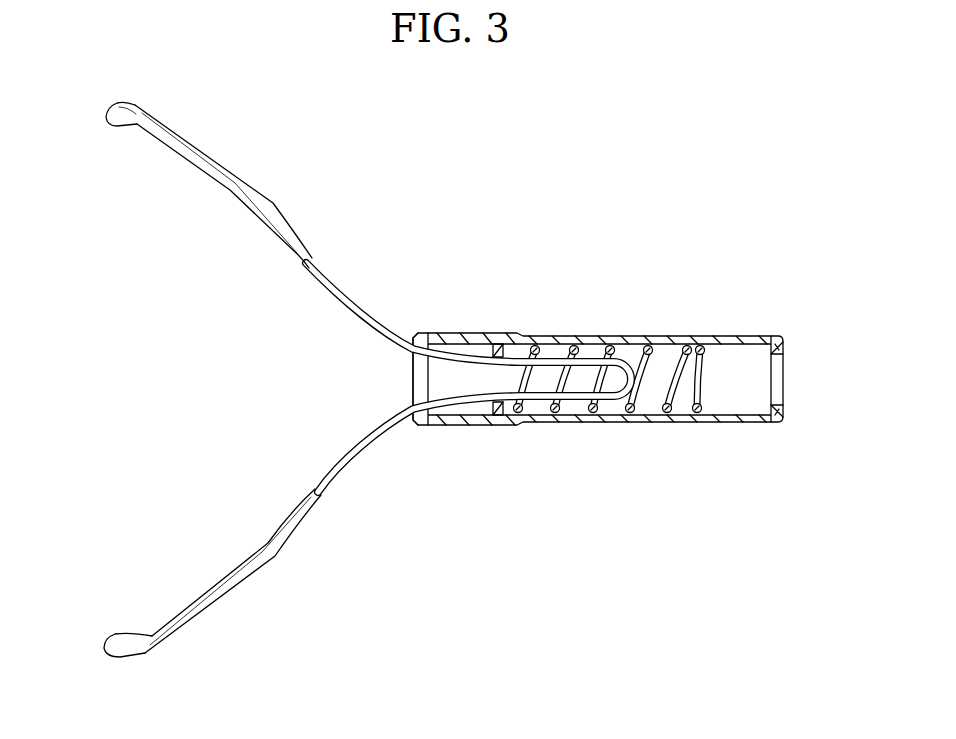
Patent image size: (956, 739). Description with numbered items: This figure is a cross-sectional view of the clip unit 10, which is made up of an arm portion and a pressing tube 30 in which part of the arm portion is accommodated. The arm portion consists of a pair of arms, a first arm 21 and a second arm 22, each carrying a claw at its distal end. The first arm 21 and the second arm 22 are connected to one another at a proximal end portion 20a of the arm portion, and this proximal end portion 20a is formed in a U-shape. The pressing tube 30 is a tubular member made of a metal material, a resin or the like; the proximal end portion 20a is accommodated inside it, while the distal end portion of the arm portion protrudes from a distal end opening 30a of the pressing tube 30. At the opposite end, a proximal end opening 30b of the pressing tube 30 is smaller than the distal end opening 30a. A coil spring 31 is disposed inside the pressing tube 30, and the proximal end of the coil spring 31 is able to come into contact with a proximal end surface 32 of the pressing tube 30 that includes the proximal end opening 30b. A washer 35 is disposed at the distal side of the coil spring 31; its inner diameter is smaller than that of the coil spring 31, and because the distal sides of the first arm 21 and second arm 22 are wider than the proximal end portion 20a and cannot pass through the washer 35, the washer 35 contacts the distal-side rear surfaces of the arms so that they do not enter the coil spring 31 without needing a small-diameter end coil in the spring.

The clip unit 10 is at (481, 379).
The proximal end portion 20a is at (607, 403).
The first arm 21 is at (190, 161).
The second arm 22 is at (207, 580).
The pressing tube 30 is at (497, 333).
The distal end opening 30a is at (403, 332).
The proximal end opening 30b is at (795, 396).
The coil spring 31 is at (646, 358).
The proximal end surface 32 is at (770, 410).
The washer 35 is at (493, 405).